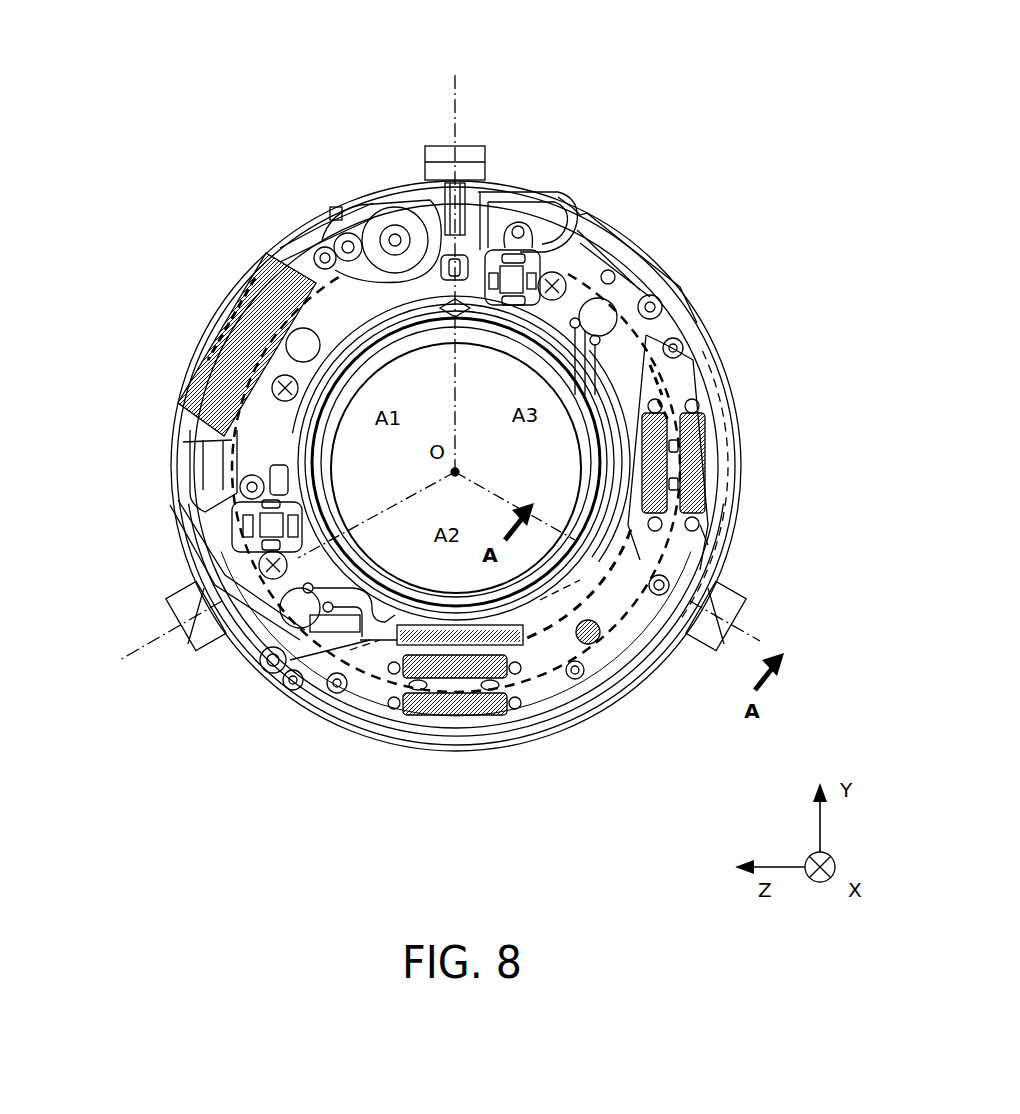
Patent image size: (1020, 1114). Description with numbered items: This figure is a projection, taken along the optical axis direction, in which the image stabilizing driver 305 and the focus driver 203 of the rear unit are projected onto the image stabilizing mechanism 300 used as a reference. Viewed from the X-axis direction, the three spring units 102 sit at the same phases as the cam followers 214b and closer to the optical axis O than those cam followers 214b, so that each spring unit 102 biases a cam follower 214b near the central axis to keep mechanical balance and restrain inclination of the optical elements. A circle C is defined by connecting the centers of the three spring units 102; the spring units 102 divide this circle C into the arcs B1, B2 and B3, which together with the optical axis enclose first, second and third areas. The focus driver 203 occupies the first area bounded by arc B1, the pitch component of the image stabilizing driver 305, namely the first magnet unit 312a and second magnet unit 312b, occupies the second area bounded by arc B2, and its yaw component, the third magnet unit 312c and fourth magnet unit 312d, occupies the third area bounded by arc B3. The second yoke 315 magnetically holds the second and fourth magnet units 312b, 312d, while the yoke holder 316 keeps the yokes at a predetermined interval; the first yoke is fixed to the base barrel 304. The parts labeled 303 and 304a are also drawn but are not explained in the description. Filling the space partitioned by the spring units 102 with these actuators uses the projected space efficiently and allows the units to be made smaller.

The image stabilizing mechanism 300 is at (93, 758).
The cam follower 214b is at (443, 153).
The spring unit 102 is at (447, 240).
The coil 304a is at (463, 201).
The base barrel 304 is at (632, 250).
The holder 303 is at (353, 340).
The arc B1 is at (262, 305).
The focus driver 203 is at (213, 347).
The arc B3 is at (637, 322).
The circle C is at (663, 367).
The third magnet unit 312c is at (688, 440).
The fourth magnet unit 312d is at (688, 440).
The yoke holder 316 is at (668, 583).
The second yoke 315 is at (640, 622).
The image stabilizing driver 305 is at (477, 737).
The first magnet unit 312a is at (440, 680).
The second magnet unit 312b is at (440, 680).
The arc B2 is at (540, 678).